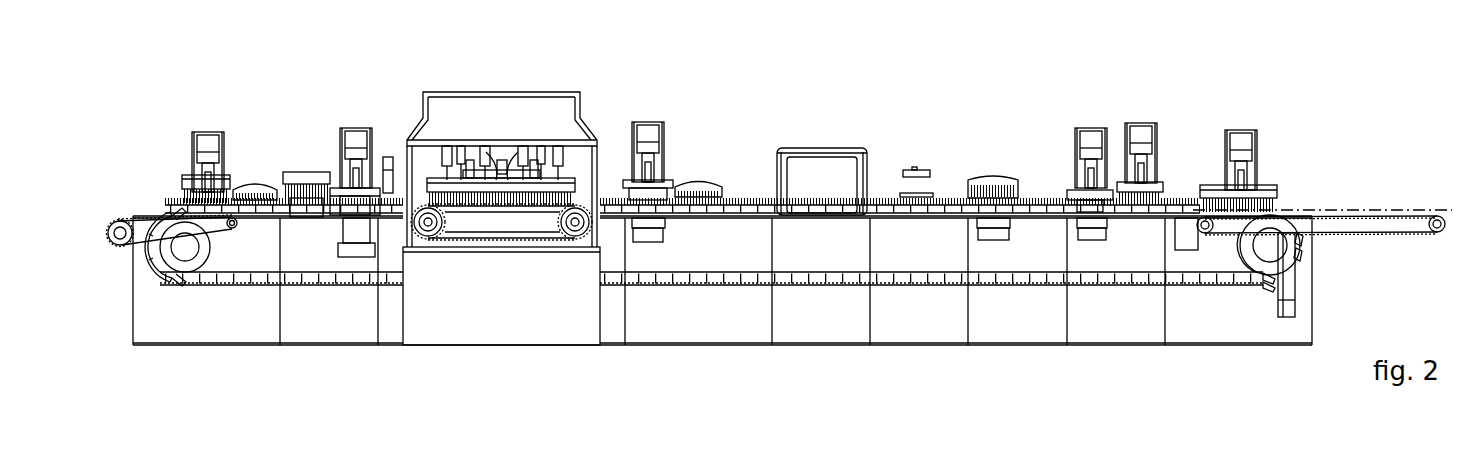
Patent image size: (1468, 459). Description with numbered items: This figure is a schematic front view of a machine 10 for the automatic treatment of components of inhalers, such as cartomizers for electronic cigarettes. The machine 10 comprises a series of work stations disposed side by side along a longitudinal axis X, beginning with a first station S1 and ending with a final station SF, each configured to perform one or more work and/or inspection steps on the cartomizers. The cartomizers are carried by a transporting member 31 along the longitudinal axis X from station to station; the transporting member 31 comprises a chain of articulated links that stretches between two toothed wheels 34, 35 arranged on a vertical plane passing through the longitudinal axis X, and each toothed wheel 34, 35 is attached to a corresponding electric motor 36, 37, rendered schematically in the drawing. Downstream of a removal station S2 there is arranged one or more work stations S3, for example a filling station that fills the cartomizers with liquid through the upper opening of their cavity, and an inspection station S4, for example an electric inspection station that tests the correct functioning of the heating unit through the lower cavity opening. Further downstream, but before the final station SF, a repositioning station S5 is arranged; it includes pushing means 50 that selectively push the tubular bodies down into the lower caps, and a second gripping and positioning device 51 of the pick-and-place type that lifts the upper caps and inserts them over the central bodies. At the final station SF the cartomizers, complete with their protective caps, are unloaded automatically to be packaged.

The machine 10 is at (1370, 90).
The transporting member 31 is at (190, 280).
The toothed wheel 34 is at (187, 247).
The toothed wheel 35 is at (1248, 252).
The electric motor 36 is at (162, 258).
The electric motor 37 is at (1272, 246).
The pushing means 50 is at (1092, 137).
The second gripping and positioning device 51 is at (1140, 133).
The work station S1 is at (207, 118).
The removal station S2 is at (365, 118).
The work station S3 is at (603, 105).
The inspection station S4 is at (842, 140).
The repositioning station S5 is at (1153, 110).
The final station SF is at (1240, 110).
The longitudinal axis X is at (1383, 212).